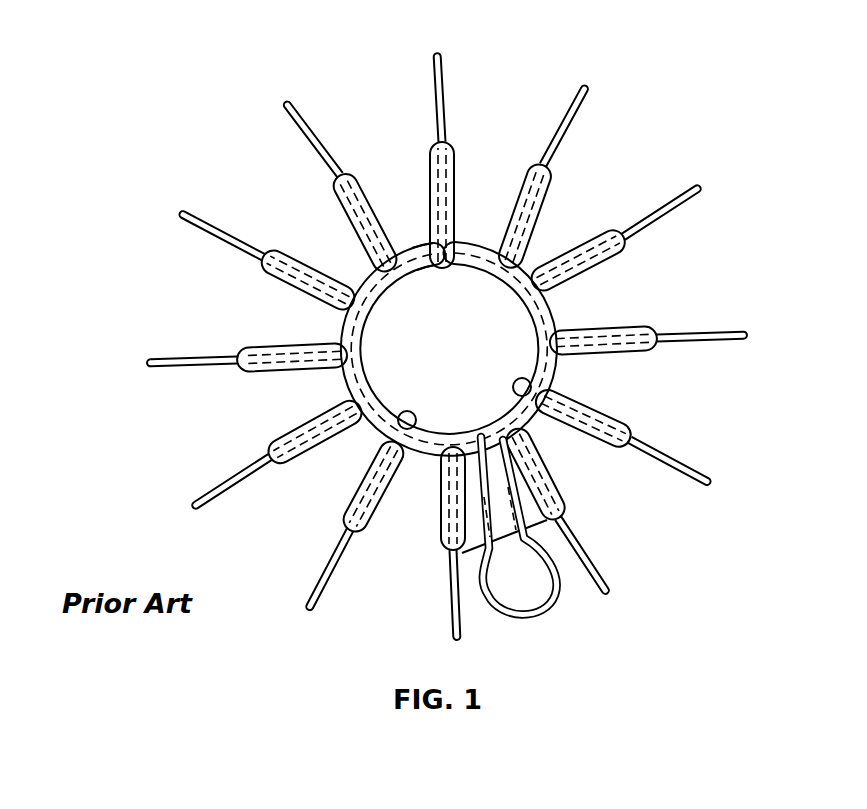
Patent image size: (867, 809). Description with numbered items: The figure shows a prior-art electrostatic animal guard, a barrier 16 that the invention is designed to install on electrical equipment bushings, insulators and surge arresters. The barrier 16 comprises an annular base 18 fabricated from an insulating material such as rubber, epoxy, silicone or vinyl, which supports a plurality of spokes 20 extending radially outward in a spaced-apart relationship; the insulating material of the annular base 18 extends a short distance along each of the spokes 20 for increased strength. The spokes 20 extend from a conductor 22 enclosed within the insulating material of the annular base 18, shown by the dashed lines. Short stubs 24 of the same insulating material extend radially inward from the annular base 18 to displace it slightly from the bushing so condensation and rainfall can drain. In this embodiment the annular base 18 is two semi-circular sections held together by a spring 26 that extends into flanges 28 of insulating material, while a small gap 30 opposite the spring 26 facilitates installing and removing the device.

The barrier 16 is at (608, 148).
The annular base 18 is at (553, 310).
The spokes 20 is at (713, 334).
The conductor 22 is at (523, 267).
The short stubs 24 is at (448, 270).
The spring 26 is at (558, 603).
The flanges 28 is at (457, 574).
The gap 30 is at (392, 193).